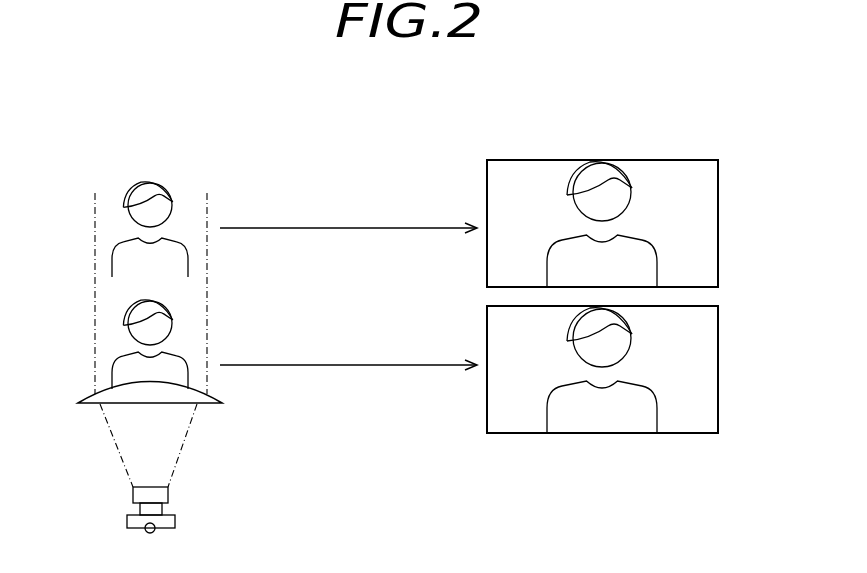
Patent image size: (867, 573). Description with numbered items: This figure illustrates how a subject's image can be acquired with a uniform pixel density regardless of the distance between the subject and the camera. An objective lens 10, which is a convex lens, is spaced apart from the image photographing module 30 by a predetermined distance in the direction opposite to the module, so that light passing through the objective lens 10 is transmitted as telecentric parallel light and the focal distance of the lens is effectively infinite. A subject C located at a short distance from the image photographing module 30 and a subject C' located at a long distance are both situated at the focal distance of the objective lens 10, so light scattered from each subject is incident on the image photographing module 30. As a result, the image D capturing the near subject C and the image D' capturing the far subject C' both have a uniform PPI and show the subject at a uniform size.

The objective lens 10 is at (92, 393).
The image photographing module 30 is at (133, 496).
The subject C is at (154, 332).
The subject C' is at (157, 217).
The image D is at (627, 369).
The image D' is at (631, 223).